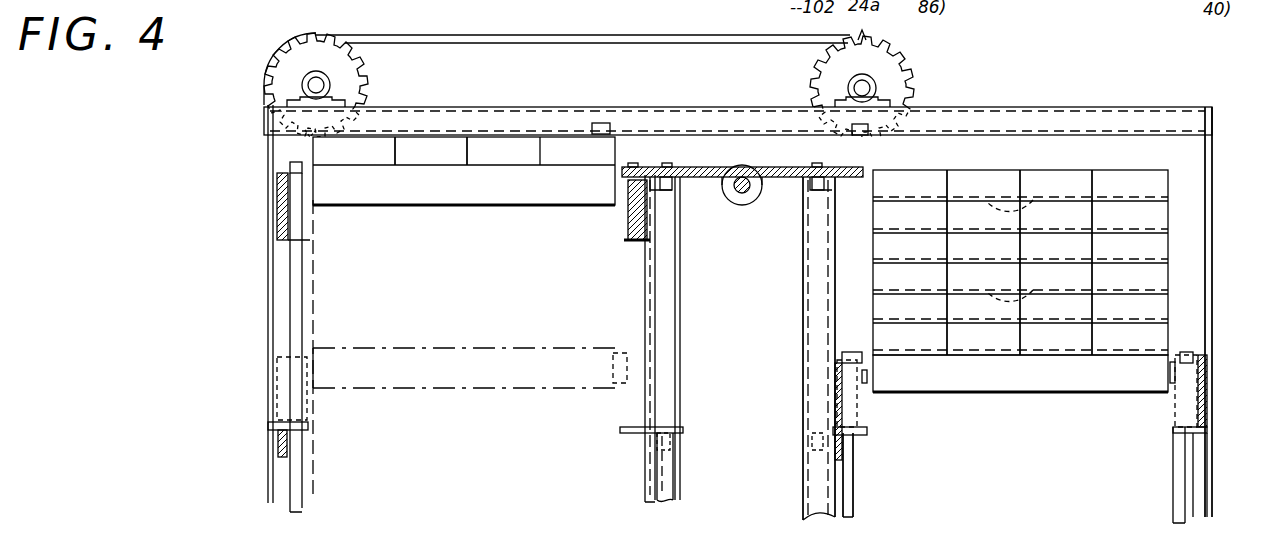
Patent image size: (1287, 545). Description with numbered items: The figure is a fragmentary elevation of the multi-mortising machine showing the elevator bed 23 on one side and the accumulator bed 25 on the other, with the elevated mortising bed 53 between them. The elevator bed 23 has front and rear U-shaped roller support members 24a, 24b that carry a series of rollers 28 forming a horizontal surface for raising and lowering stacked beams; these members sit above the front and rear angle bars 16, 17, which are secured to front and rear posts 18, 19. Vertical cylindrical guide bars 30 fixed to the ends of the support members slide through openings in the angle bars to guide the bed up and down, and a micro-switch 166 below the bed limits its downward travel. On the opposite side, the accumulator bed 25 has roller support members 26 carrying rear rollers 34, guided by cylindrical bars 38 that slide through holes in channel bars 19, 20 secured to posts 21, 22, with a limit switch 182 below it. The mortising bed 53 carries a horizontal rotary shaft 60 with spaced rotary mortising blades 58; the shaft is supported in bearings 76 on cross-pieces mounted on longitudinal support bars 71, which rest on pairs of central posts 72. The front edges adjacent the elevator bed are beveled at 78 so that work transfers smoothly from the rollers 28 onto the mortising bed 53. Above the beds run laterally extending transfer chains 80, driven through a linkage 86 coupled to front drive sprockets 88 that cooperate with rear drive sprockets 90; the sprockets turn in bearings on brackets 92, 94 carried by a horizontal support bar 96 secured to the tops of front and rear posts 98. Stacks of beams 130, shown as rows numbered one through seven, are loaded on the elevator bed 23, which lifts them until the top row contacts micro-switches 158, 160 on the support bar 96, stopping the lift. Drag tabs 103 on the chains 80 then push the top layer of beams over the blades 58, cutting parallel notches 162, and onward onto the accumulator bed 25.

The front angle bar 16 is at (283, 443).
The rear angle bar 17 is at (623, 433).
The front post 18 is at (277, 457).
The rear post 19 is at (663, 475).
The rear angle bar 20 is at (853, 437).
The front post 21 is at (808, 500).
The rear post 22 is at (1213, 487).
The elevator bed 23 is at (480, 190).
The front roller support member 24a is at (275, 237).
The rear roller support member 24b is at (628, 242).
The accumulator bed 25 is at (1063, 352).
The roller support member 26 is at (862, 427).
The roller 28 is at (512, 197).
The guide bar 30 is at (632, 305).
The rear roller 34 is at (1047, 383).
The guide bar 38 is at (850, 493).
The mortising bed 53 is at (708, 166).
The rotary mortising blade 58 is at (747, 193).
The rotary shaft 60 is at (740, 168).
The support bar 71 is at (680, 188).
The post 72 is at (667, 342).
The bearing 76 is at (728, 186).
The bevel 78 is at (628, 165).
The transfer chain 80 is at (632, 36).
The linkage 86 is at (318, 83).
The front drive sprocket 88 is at (360, 80).
The rear drive sprocket 90 is at (908, 78).
The bracket 92 is at (302, 80).
The bracket 94 is at (878, 88).
The support bar 96 is at (660, 108).
The post 98 is at (268, 170).
The drag tab 103 is at (866, 32).
The stack of beams 130 is at (420, 148).
The micro-switch 158 is at (602, 123).
The micro-switch 160 is at (872, 134).
The notch 162 is at (1033, 200).
The micro-switch 166 is at (683, 428).
The limit switch 182 is at (810, 442).